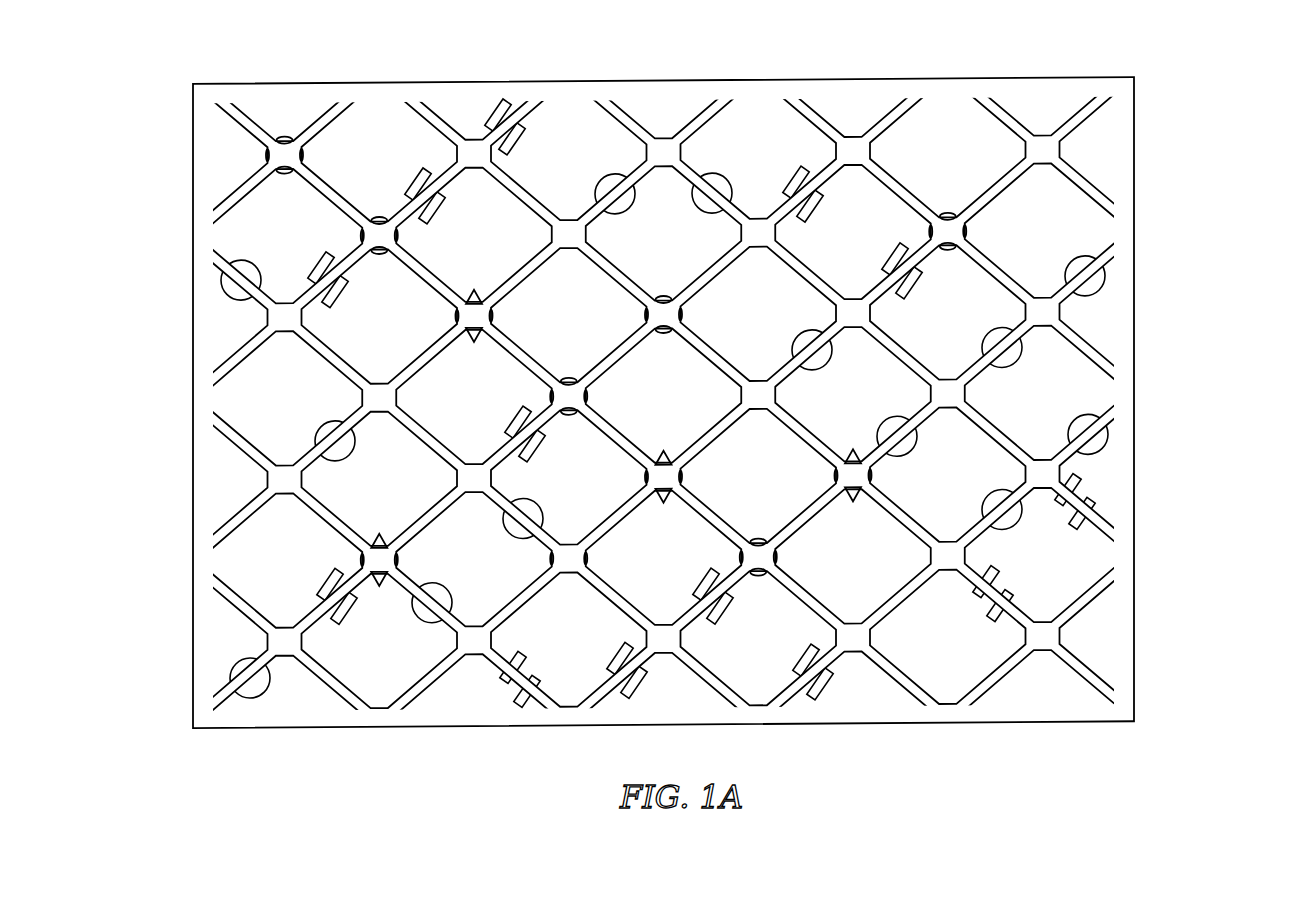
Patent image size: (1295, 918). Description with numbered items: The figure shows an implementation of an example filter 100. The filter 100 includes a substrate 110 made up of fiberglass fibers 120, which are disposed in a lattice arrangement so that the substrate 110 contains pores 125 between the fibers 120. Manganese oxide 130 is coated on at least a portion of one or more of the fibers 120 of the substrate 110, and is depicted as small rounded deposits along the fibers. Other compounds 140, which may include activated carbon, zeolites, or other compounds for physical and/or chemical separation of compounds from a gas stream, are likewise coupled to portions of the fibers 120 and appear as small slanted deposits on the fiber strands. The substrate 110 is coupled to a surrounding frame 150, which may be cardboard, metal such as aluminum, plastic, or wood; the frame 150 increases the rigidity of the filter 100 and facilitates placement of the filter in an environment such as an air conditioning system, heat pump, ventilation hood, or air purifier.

The filter 100 is at (676, 459).
The substrate 110 is at (637, 459).
The fibers 120 is at (246, 350).
The pores 125 is at (240, 250).
The manganese oxide 130 is at (248, 657).
The other compounds 140 is at (491, 112).
The frame 150 is at (1140, 397).